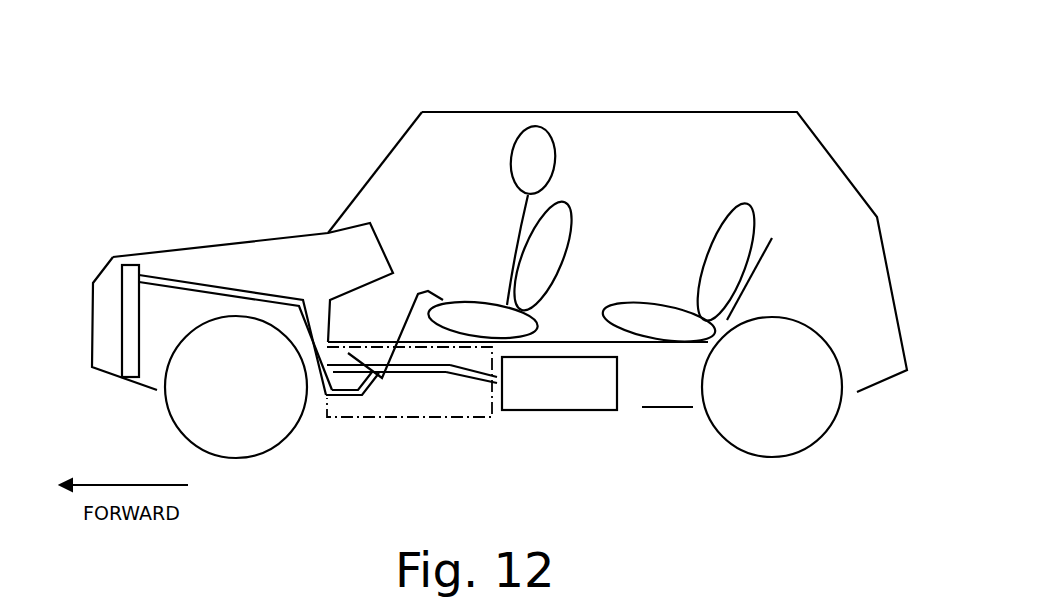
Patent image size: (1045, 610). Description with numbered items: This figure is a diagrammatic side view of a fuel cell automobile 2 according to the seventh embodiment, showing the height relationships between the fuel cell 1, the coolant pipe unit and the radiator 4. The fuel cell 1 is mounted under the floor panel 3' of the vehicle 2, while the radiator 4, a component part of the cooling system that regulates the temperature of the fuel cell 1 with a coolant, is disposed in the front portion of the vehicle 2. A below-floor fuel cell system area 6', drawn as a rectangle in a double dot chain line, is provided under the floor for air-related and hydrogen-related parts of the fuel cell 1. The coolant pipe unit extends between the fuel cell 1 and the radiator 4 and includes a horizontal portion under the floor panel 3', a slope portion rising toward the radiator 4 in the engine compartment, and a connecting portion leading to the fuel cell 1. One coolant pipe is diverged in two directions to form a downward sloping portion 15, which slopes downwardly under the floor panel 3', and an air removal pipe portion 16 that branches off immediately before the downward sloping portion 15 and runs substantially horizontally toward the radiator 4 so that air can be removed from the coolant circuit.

The fuel cell automobile 2 is at (619, 112).
The radiator 4 is at (133, 264).
The downward sloping portion 15 is at (345, 402).
The below-floor fuel cell system area 6' is at (409, 424).
The air removal pipe portion 16 is at (378, 379).
The fuel cell 1 is at (586, 411).
The floor panel 3' is at (667, 417).